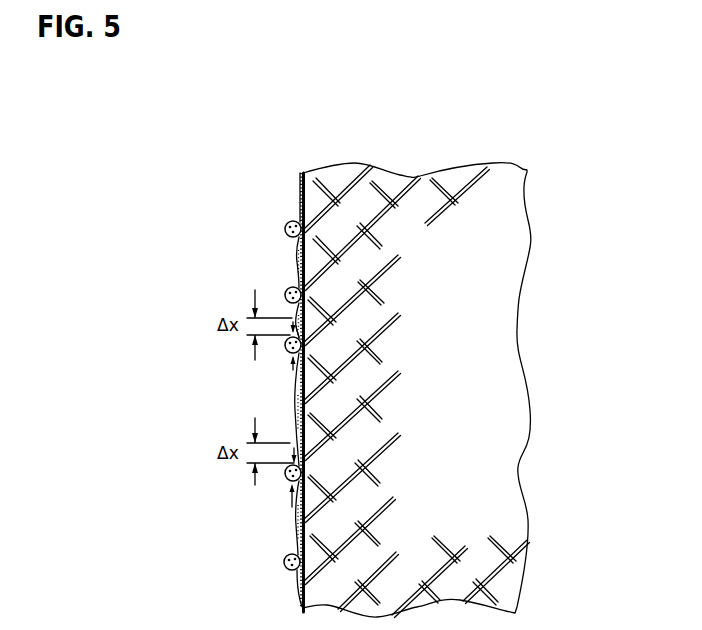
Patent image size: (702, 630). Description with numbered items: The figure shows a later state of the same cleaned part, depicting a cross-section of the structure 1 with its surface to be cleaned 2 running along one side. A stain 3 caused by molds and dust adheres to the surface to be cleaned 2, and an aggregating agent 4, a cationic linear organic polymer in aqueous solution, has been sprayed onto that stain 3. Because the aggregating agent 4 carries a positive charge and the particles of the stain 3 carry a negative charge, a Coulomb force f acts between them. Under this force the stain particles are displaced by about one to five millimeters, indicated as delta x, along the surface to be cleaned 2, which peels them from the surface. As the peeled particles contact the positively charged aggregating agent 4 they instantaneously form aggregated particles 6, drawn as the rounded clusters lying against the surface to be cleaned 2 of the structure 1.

The structure 1 is at (394, 302).
The surface to be cleaned 2 is at (300, 257).
The stain 3 is at (301, 190).
The aggregating agent 4 is at (305, 205).
The aggregated particles 6 is at (288, 350).
The Coulomb force f is at (294, 328).